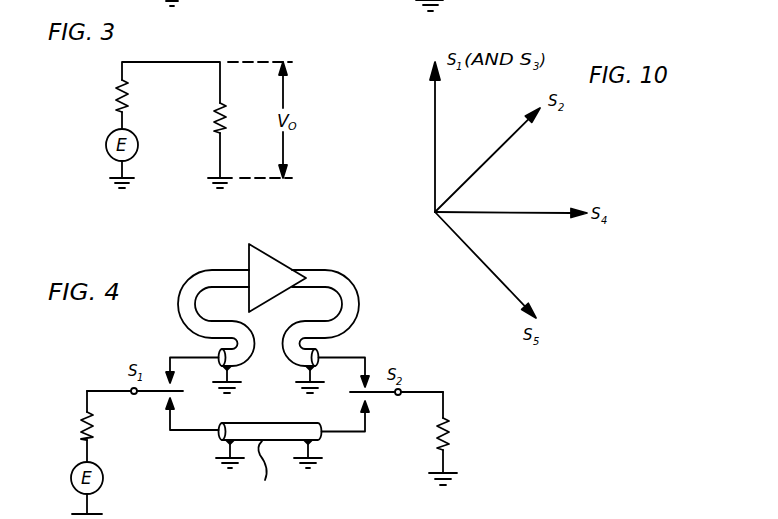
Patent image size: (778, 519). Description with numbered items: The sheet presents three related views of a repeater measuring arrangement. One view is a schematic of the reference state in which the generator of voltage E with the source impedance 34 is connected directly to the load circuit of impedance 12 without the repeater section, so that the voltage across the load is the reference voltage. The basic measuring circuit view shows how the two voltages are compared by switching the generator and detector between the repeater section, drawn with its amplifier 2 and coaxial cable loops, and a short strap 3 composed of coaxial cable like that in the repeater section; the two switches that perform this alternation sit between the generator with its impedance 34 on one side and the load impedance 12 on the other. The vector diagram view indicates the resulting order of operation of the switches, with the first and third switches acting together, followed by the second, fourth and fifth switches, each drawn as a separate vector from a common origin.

In FIG. 4, the amplifier 2 is at (273, 263).
In FIG. 4, the short strap 3 is at (274, 430).
In FIG. 3, the impedance Z12 12 is at (208, 118).
In FIG. 4, the impedance Z12 12 is at (453, 435).
In FIG. 3, the impedance Z34 34 is at (112, 91).
In FIG. 4, the impedance Z34 34 is at (76, 419).